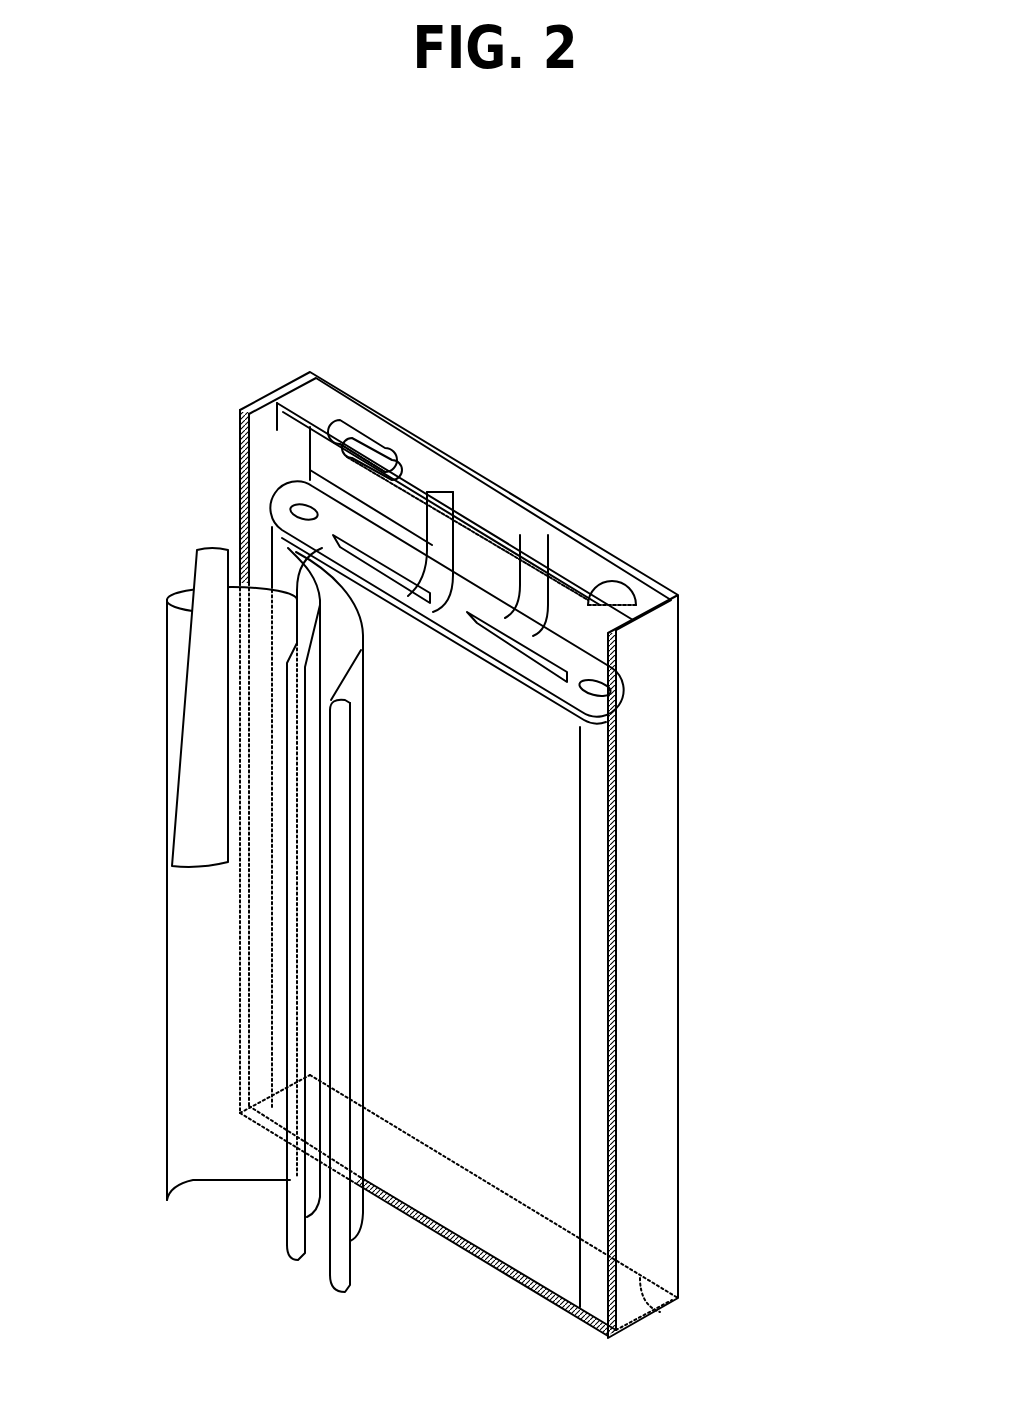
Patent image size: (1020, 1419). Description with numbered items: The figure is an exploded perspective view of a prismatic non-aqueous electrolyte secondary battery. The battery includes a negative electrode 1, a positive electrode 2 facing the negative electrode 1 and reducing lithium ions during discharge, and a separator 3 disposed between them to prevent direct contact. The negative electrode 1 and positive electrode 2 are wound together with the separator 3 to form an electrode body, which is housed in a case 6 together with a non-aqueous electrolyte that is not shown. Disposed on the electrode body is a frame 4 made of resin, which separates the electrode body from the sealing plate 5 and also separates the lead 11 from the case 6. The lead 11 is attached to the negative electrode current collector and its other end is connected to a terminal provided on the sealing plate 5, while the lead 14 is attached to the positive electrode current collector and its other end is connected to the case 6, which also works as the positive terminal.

The negative electrode 1 is at (333, 1277).
The positive electrode 2 is at (182, 1145).
The separator 3 is at (297, 1212).
The frame 4 is at (617, 655).
The sealing plate 5 is at (317, 403).
The case 6 is at (667, 868).
The lead 11 is at (312, 470).
The lead 14 is at (207, 567).